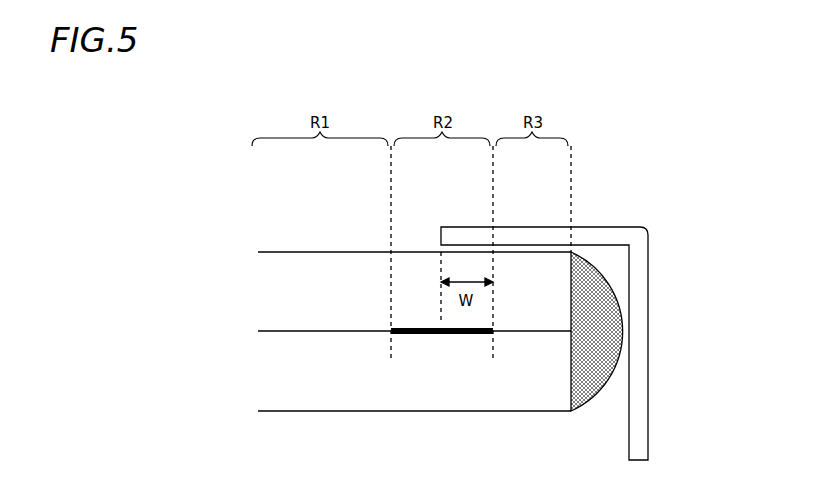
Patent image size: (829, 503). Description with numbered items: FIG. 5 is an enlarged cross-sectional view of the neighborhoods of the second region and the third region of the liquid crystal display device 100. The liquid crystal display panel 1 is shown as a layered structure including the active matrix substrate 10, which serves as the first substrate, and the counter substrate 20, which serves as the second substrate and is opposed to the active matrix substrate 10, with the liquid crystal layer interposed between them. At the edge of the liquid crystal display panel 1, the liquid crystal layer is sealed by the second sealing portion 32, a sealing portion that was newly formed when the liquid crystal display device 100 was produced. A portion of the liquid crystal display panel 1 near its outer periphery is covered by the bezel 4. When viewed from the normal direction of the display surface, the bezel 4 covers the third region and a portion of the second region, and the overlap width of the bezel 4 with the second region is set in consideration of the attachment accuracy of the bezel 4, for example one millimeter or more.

The liquid crystal display device 100 is at (687, 212).
The liquid crystal display panel 1 is at (266, 203).
The active matrix substrate 10 is at (280, 362).
The counter substrate 20 is at (333, 280).
The second sealing portion 32 is at (594, 375).
The bezel 4 is at (642, 326).